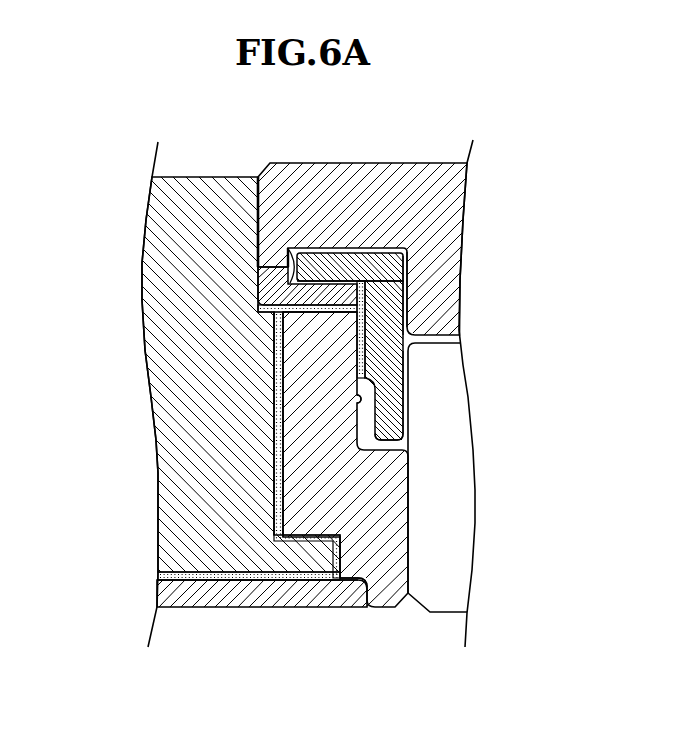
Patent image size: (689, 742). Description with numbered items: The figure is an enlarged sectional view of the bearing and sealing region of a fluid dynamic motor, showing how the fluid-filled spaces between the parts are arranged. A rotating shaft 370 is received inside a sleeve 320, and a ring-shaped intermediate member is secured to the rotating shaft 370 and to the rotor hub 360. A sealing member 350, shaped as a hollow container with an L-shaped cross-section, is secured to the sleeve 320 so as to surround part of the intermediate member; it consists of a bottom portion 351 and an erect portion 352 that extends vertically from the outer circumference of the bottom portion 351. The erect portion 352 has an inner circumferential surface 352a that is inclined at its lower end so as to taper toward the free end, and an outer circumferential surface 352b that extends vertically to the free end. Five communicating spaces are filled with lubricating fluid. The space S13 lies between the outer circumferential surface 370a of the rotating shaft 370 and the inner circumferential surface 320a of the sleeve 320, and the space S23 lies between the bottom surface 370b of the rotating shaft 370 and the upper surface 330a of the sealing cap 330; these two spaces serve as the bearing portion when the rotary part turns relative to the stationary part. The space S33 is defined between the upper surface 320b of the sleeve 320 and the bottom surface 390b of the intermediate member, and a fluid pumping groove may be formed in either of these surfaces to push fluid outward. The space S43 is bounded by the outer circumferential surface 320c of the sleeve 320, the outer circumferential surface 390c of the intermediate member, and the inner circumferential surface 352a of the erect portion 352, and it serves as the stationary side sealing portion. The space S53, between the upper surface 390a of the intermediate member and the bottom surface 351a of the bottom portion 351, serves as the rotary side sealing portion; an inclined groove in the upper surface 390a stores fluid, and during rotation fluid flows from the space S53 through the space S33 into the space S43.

The sleeve 320 is at (231, 459).
The inner circumferential surface of the sleeve 320a is at (283, 452).
The upper surface of the sleeve 320b is at (275, 313).
The outer circumferential surface of the sleeve 320c is at (358, 400).
The sealing cap 330 is at (250, 615).
The upper surface of the sealing cap 330a is at (198, 580).
The sealing member 350 is at (431, 291).
The bottom portion 351 is at (355, 262).
The bottom surface of the bottom portion 351a is at (310, 281).
The erect portion 352 is at (377, 392).
The inner circumferential surface of the erect portion 352a is at (410, 442).
The outer circumferential surface of the erect portion 352b is at (403, 418).
The rotor hub 360 is at (425, 182).
The rotating shaft 370 is at (196, 472).
The outer circumferential surface of the rotating shaft 370a is at (273, 435).
The bottom surface of the rotating shaft 370b is at (158, 563).
The upper surface of the intermediate member 390a is at (258, 176).
The bottom surface of the intermediate member 390b is at (407, 311).
The outer circumferential surface of the intermediate member 390c is at (363, 290).
The space between rotating shaft and sleeve S13 is at (274, 498).
The space between rotating shaft and sealing cap S23 is at (338, 578).
The space between sleeve and intermediate member S33 is at (262, 312).
The stationary side sealing portion space S43 is at (401, 340).
The rotary side sealing portion space S53 is at (309, 280).